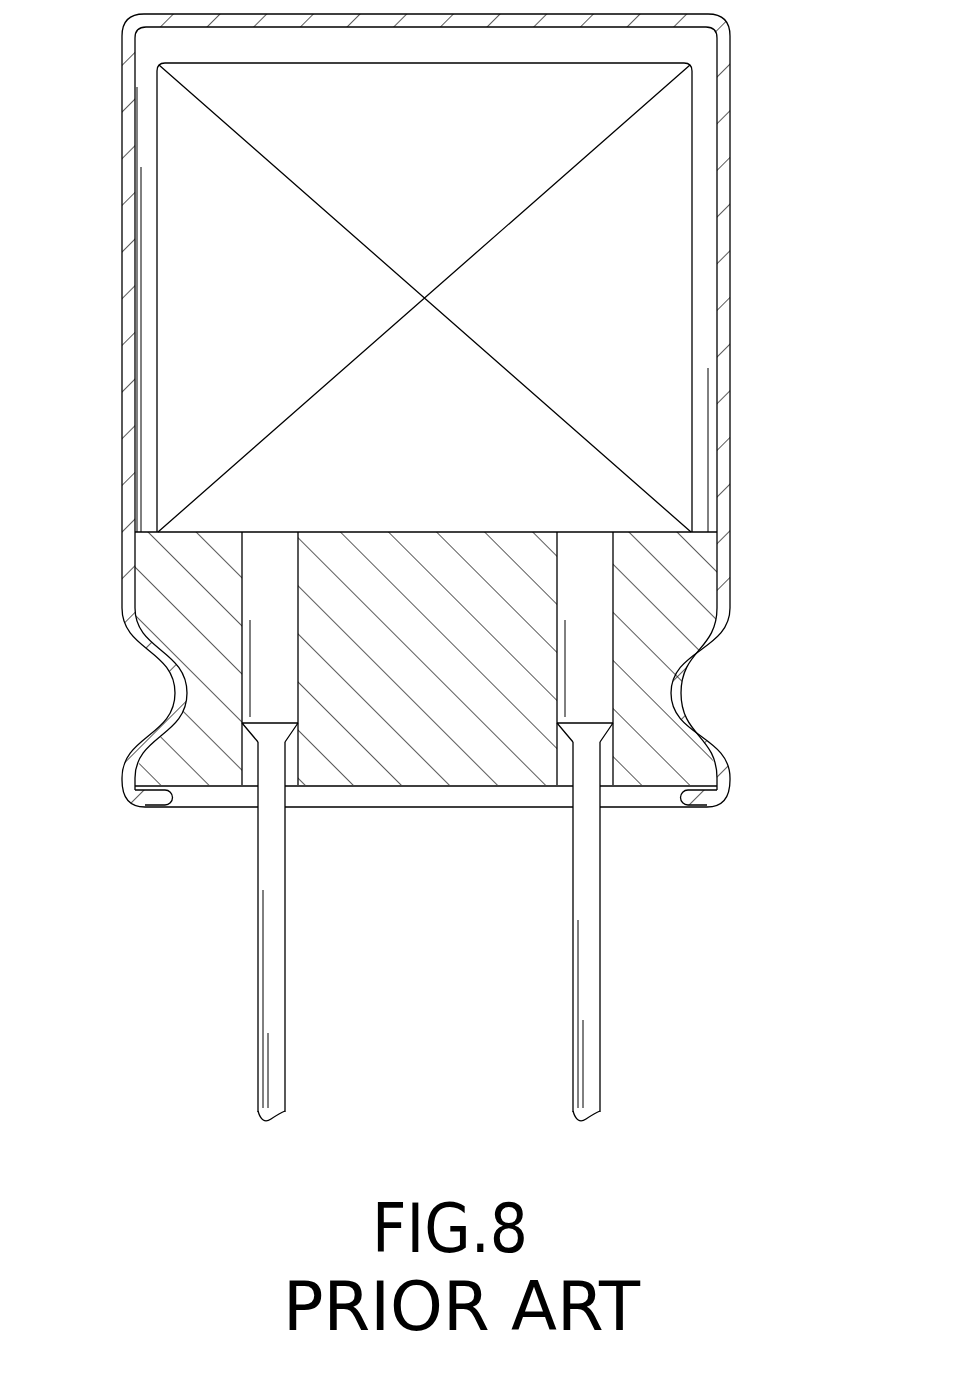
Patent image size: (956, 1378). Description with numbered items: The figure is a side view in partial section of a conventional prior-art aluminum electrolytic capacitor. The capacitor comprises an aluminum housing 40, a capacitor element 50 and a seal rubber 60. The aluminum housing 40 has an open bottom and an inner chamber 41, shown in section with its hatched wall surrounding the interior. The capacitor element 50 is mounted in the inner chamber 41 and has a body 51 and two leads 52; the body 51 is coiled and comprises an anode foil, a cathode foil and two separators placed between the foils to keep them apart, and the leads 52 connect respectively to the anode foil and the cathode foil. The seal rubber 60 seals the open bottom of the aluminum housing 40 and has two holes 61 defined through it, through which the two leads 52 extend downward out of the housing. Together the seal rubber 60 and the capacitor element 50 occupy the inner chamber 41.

The aluminum housing 40 is at (732, 360).
The inner chamber 41 is at (148, 466).
The capacitor element 50 is at (714, 200).
The body 51 is at (660, 473).
The leads 52 is at (273, 882).
The seal rubber 60 is at (662, 652).
The holes 61 is at (240, 706).